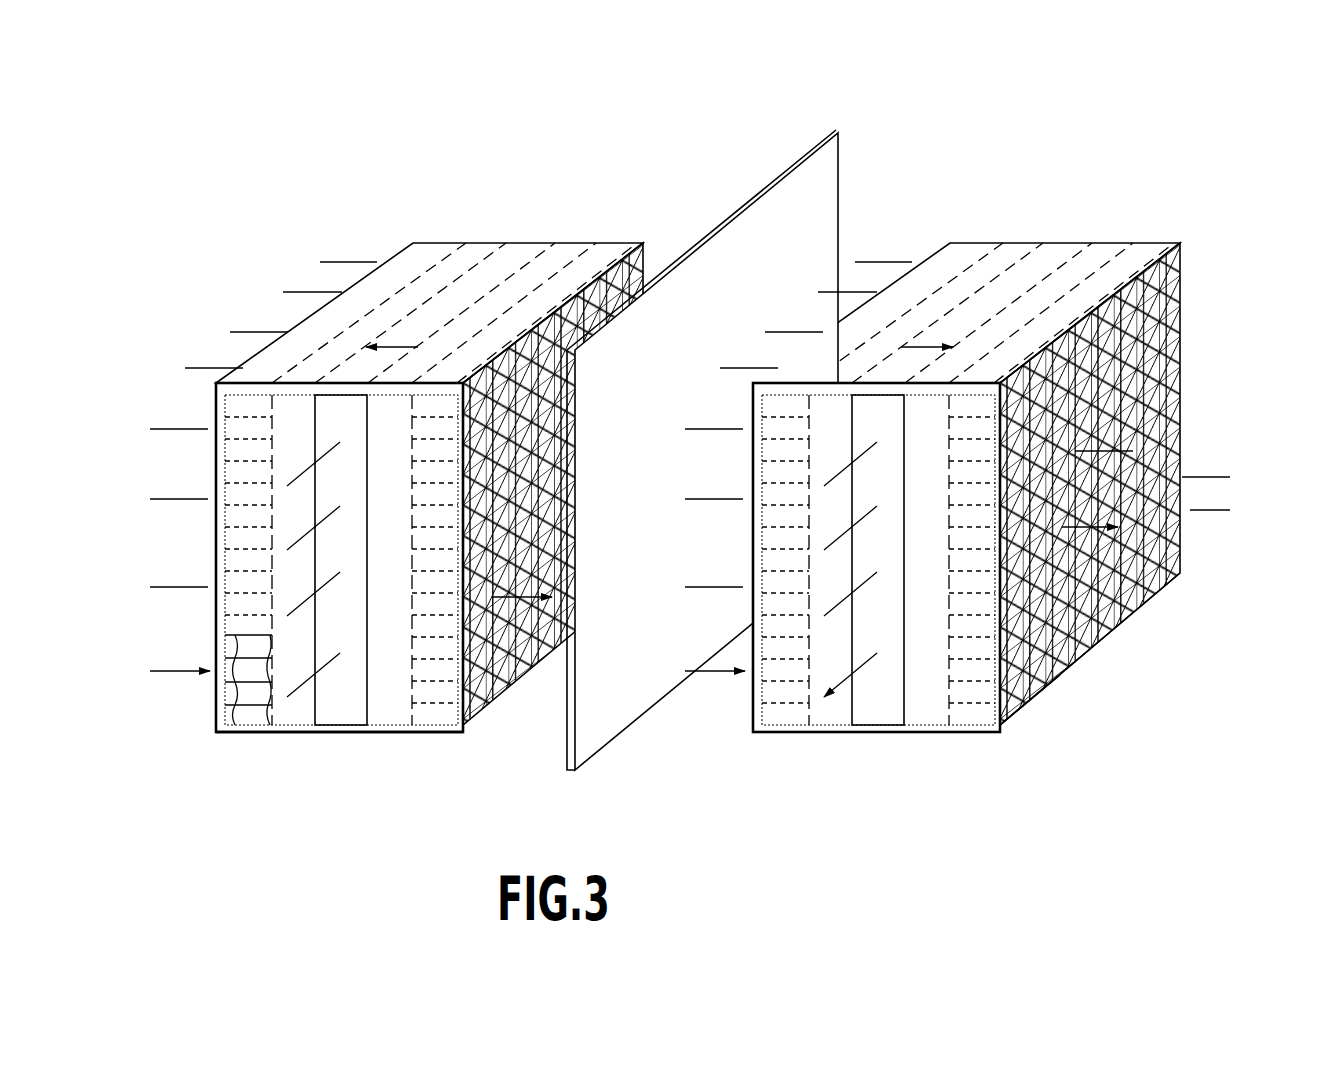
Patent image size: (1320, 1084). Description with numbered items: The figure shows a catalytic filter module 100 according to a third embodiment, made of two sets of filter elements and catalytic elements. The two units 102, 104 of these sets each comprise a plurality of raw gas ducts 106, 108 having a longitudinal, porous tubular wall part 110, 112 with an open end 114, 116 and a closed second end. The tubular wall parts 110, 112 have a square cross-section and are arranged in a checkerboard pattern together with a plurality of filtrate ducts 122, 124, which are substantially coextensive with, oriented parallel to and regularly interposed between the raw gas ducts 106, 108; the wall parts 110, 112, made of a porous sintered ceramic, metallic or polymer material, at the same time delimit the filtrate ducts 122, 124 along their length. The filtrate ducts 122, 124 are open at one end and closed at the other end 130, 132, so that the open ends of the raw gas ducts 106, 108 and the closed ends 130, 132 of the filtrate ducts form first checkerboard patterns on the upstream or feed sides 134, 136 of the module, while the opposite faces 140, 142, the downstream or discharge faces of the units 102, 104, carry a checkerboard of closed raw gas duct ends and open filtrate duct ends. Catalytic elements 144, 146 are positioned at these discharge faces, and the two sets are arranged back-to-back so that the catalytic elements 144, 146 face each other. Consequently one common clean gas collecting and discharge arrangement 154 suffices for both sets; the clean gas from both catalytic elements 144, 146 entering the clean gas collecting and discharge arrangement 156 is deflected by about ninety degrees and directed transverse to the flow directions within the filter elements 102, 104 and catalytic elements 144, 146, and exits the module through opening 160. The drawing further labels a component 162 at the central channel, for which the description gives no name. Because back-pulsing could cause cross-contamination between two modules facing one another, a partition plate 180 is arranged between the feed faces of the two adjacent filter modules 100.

The filter module 100 is at (1002, 160).
The unit 102 is at (428, 260).
The unit 104 is at (607, 257).
The raw gas duct 106 is at (1173, 347).
The raw gas duct 108 is at (232, 685).
The tubular wall part 110 is at (242, 405).
The tubular wall part 112 is at (973, 712).
The open end 114 is at (235, 715).
The open end 116 is at (1033, 692).
The filtrate duct 122 is at (247, 428).
The filtrate duct 124 is at (980, 692).
The closed end 130 is at (230, 653).
The closed end 132 is at (1140, 603).
The feed side 134 is at (235, 313).
The feed side 136 is at (1212, 403).
The discharge face 140 is at (457, 255).
The discharge face 142 is at (560, 267).
The catalytic element 144 is at (432, 290).
The catalytic element 146 is at (532, 280).
The clean gas collecting and discharge arrangement 154 is at (372, 372).
The clean gas collecting and discharge arrangement 156 is at (320, 753).
The opening 160 is at (318, 574).
The central channel 162 is at (222, 543).
The partition plate 180 is at (603, 713).